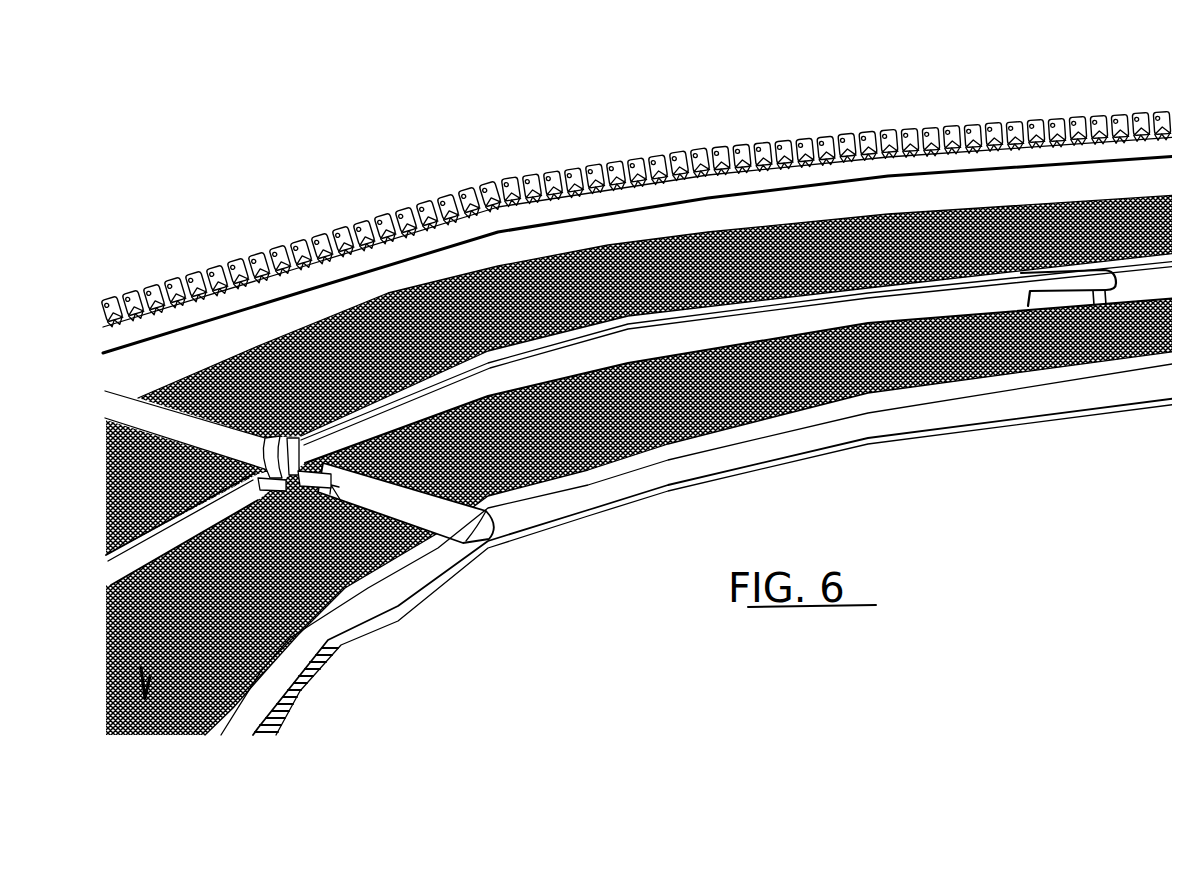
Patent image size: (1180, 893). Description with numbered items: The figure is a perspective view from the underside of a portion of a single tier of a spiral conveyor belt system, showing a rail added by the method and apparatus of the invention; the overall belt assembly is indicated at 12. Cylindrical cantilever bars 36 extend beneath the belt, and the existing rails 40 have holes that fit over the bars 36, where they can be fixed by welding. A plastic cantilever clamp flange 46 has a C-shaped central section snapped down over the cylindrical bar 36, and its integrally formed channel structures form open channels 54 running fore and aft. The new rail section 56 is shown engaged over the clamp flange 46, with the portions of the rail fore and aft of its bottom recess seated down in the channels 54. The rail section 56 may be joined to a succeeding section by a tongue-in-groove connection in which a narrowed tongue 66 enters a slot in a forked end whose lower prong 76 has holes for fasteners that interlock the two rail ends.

The article / belt assembly 12 is at (516, 157).
The cantilever bar 36 is at (450, 528).
The existing rail 40 is at (620, 222).
The cantilever clamp flange 46 is at (370, 567).
The channel 54 is at (300, 428).
The rail section 56 is at (937, 365).
The tongue 66 is at (1047, 298).
The lower prong 76 is at (1099, 297).